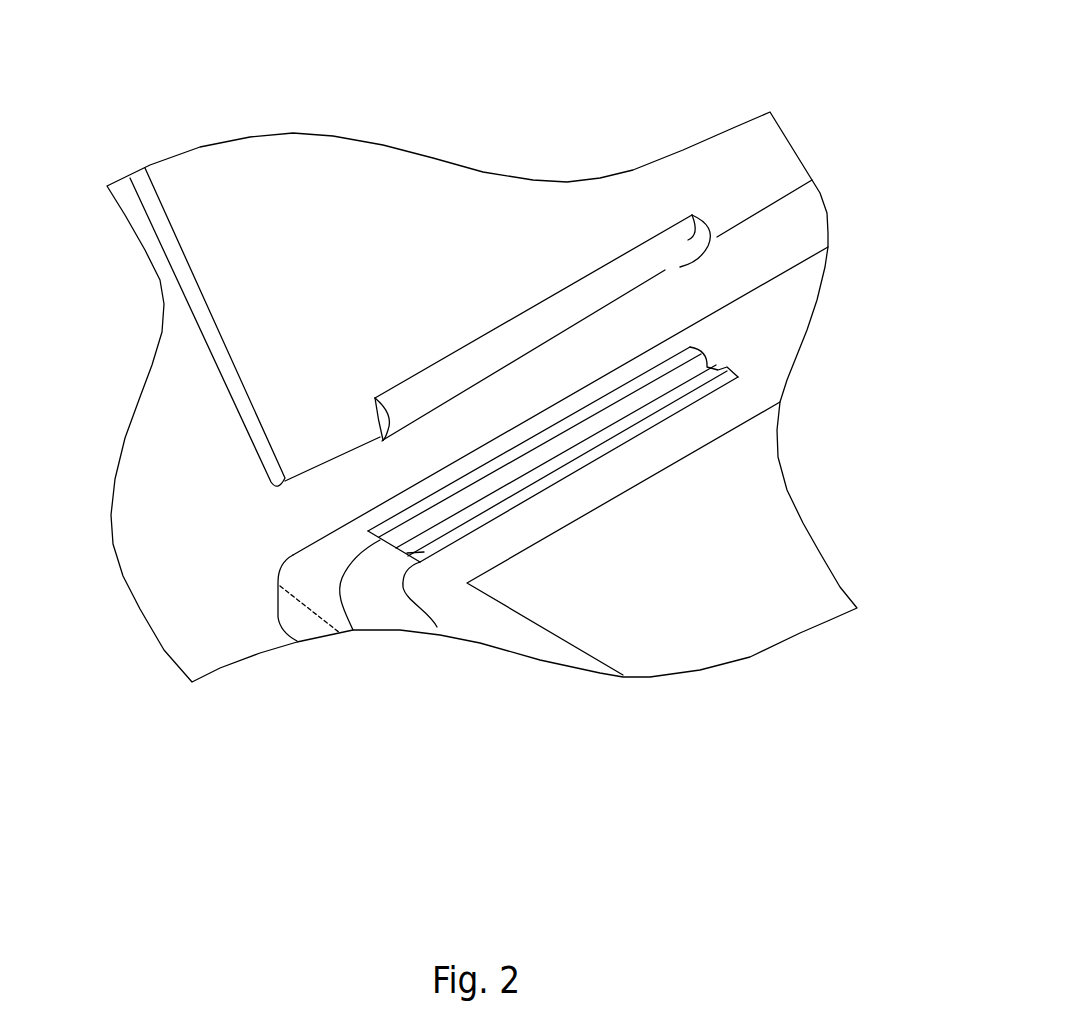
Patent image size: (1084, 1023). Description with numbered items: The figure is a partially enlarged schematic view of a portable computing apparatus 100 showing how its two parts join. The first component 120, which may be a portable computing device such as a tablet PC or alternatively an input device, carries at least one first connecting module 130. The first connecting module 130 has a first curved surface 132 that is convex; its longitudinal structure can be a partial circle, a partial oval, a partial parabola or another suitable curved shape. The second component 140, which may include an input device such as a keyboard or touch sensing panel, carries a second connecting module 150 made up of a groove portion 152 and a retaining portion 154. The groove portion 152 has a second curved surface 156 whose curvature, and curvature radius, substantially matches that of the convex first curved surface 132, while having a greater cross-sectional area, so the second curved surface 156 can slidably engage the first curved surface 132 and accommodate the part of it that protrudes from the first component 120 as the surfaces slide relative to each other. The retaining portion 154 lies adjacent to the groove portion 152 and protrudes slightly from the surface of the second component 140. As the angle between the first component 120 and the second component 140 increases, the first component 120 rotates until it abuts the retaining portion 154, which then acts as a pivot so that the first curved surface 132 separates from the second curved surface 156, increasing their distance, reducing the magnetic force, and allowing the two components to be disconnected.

The portable computing apparatus 100 is at (740, 42).
The first component 120 is at (625, 184).
The first connecting module 130 is at (639, 320).
The first curved surface 132 is at (660, 267).
The second component 140 is at (557, 647).
The second connecting module 150 is at (460, 700).
The groove portion 152 is at (437, 627).
The retaining portion 154 is at (353, 630).
The second curved surface 156 is at (415, 521).